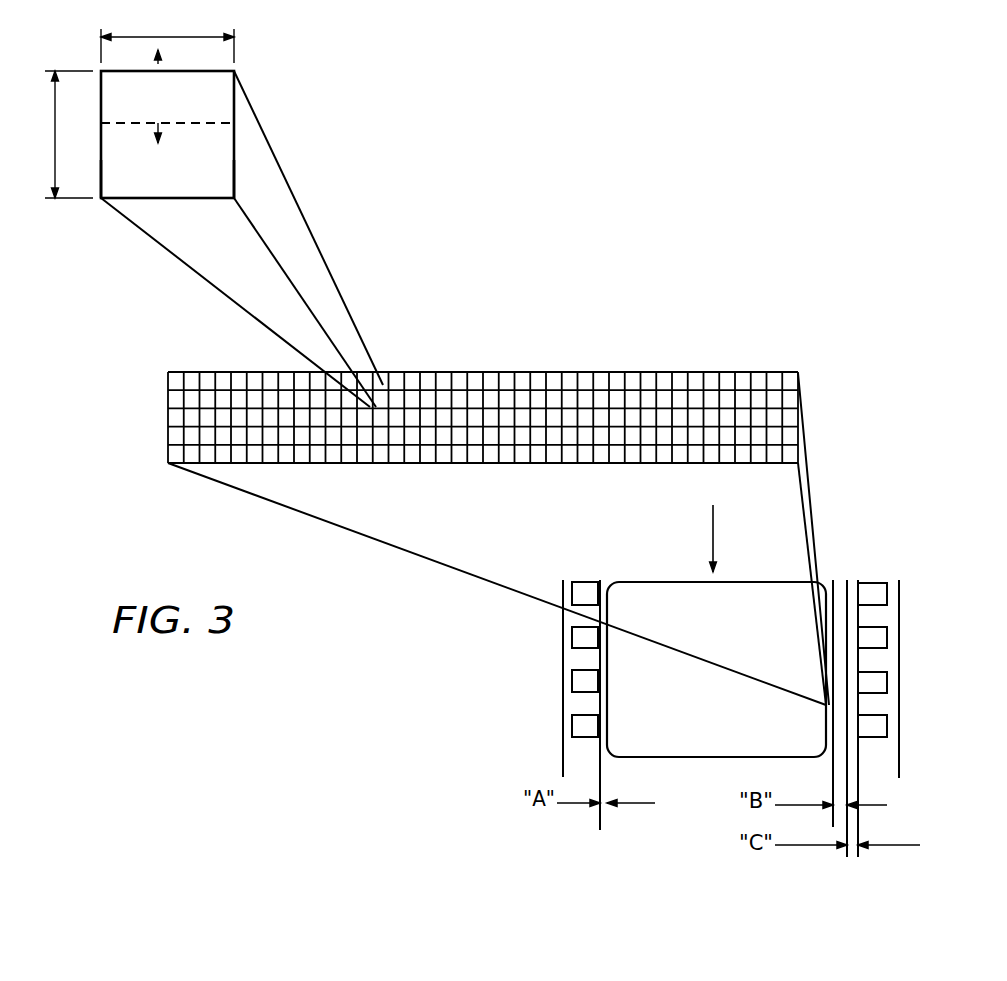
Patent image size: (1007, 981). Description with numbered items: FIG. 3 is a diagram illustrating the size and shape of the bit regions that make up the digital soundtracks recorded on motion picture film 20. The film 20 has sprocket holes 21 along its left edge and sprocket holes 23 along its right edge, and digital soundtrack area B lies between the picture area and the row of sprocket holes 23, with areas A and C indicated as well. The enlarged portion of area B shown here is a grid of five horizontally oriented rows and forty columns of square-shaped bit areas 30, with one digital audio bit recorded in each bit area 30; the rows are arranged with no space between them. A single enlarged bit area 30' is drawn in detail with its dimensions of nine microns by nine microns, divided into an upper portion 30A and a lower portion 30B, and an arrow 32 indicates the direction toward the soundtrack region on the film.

The bit areas 30 is at (483, 394).
The enlarged pixel 30' is at (182, 102).
The upper pixel portion 30A is at (220, 94).
The lower pixel portion 30B is at (178, 186).
The motion picture film 20 is at (560, 672).
The sprocket holes 21 is at (573, 692).
The sprocket holes 23 is at (867, 588).
The incident light direction 32 is at (712, 535).